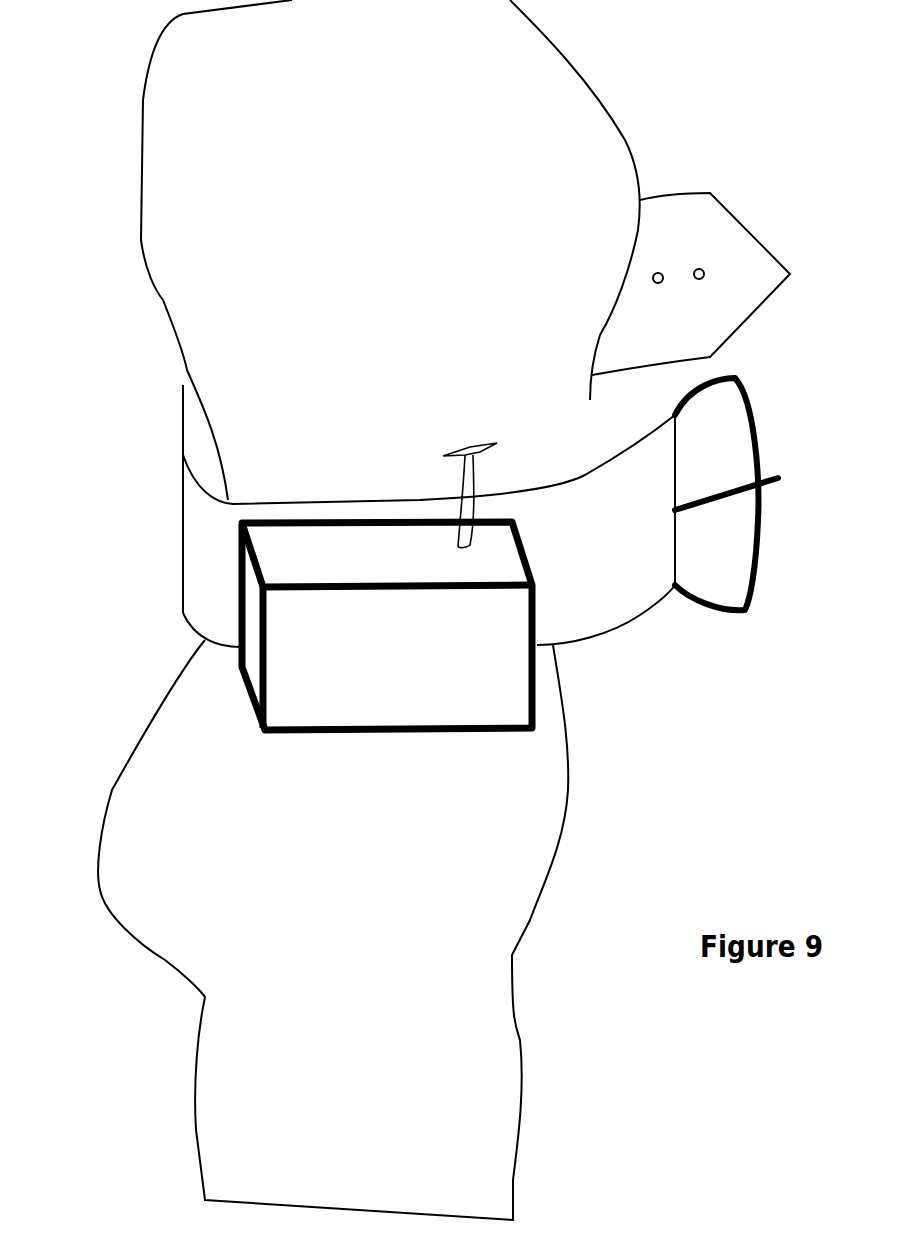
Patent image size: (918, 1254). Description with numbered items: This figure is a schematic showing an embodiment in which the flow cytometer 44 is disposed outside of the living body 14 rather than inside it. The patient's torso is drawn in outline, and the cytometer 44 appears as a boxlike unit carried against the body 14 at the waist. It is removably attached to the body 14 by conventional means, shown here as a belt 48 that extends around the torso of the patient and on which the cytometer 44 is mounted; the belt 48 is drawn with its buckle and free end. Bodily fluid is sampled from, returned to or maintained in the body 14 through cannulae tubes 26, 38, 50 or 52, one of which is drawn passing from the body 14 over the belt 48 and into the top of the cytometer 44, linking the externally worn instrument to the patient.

The body 14 is at (141, 173).
The cannula tube 26 is at (413, 444).
The cannula tube 38 is at (413, 444).
The cannula tube 50 is at (413, 444).
The cannula tube 52 is at (472, 483).
The flow cytometer 44 is at (347, 732).
The belt 48 is at (636, 628).